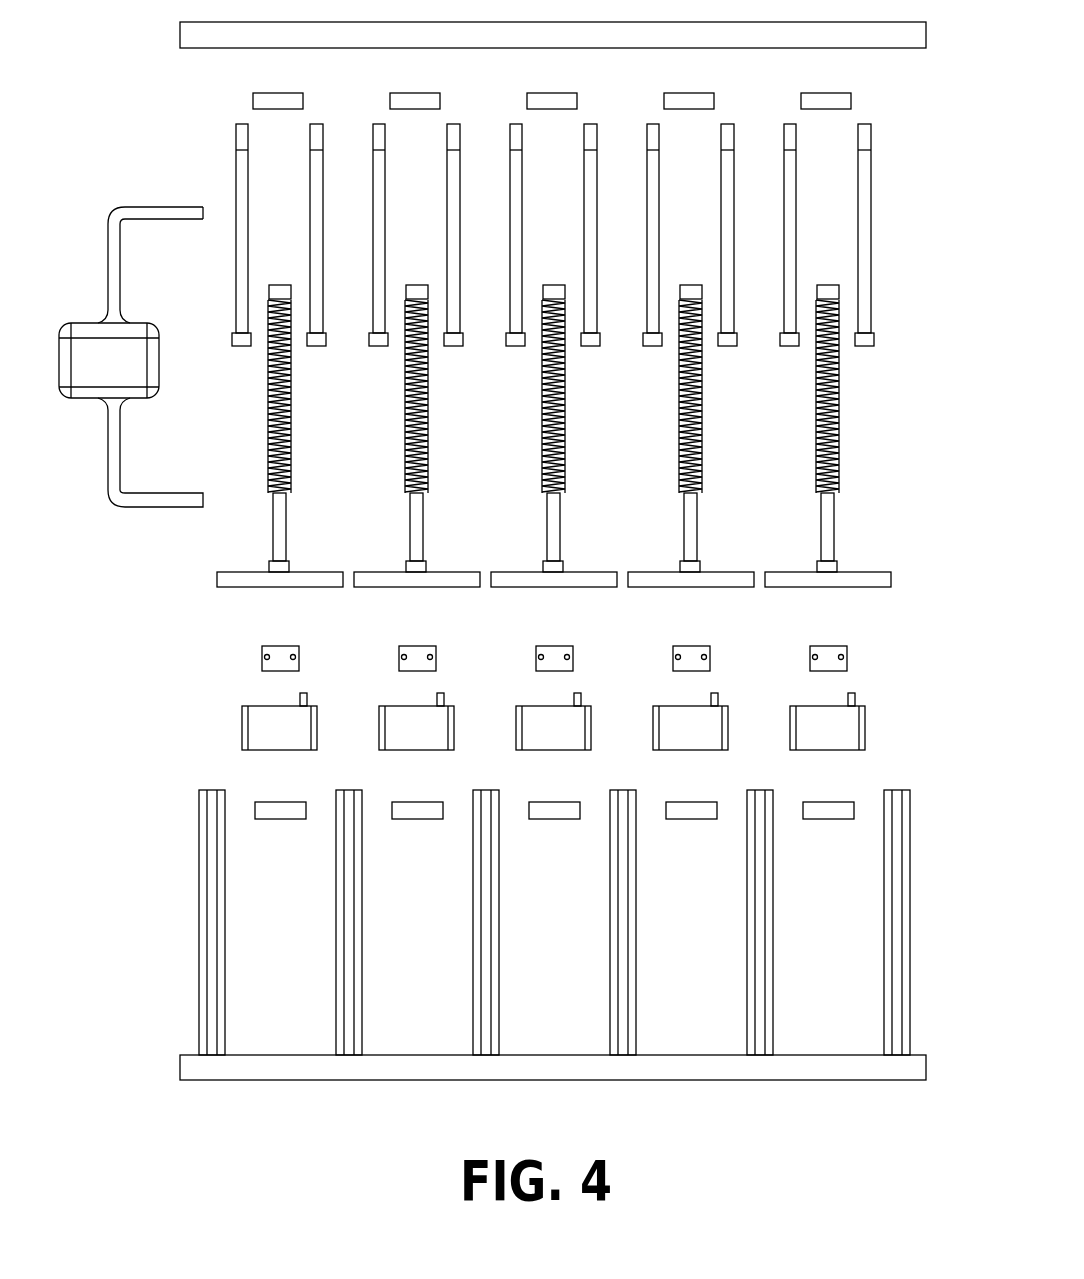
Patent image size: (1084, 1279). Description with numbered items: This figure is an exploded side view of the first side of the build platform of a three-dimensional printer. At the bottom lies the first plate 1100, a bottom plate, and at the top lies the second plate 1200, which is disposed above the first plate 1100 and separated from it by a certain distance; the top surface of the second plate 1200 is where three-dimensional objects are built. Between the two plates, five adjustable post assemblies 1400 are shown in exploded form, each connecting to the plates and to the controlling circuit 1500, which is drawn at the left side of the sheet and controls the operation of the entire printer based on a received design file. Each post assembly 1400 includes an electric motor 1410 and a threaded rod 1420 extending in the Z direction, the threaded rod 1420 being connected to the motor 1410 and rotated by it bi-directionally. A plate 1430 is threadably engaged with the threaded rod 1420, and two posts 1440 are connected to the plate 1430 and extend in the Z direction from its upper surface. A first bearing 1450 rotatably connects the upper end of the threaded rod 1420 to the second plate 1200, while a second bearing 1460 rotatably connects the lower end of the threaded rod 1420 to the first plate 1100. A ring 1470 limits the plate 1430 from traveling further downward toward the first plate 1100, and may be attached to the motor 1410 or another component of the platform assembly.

The first plate 1100 is at (464, 1078).
The second plate 1200 is at (876, 48).
The adjustable post assembly 1400 is at (224, 603).
The electric motor 1410 is at (864, 735).
The threaded rod 1420 is at (833, 440).
The plate 1430 is at (866, 582).
The posts 1440 is at (792, 221).
The first bearing 1450 is at (846, 102).
The second bearing 1460 is at (849, 815).
The ring 1470 is at (847, 655).
The controlling circuit 1500 is at (101, 377).